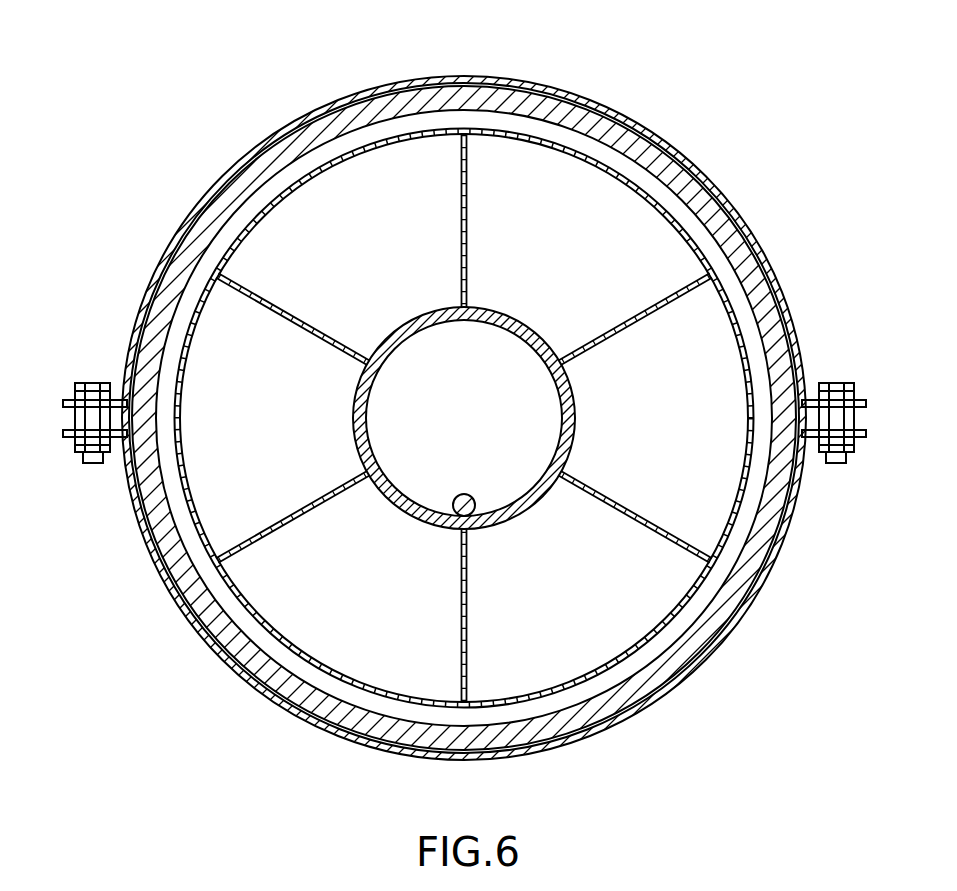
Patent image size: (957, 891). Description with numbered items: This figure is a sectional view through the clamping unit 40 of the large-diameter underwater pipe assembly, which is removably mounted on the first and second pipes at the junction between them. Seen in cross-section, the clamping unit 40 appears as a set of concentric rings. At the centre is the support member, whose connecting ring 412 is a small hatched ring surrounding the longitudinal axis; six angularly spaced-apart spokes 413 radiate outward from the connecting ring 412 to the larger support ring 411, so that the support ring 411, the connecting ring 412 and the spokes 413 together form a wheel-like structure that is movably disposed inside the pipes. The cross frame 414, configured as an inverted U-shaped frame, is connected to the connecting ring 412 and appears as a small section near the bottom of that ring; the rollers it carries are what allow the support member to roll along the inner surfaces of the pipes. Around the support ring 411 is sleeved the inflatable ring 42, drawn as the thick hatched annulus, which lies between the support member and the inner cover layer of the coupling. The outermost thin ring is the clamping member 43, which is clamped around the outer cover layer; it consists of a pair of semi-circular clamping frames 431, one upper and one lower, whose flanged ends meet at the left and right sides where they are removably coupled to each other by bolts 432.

The clamping unit 40 is at (464, 362).
The support ring 411 is at (632, 187).
The connecting ring 412 is at (515, 322).
The spokes 413 is at (655, 313).
The cross frame 414 is at (459, 494).
The inflatable ring 42 is at (691, 215).
The clamping member 43 is at (478, 402).
The semi-circular clamping frames 431 is at (765, 250).
The bolts 432 is at (833, 383).